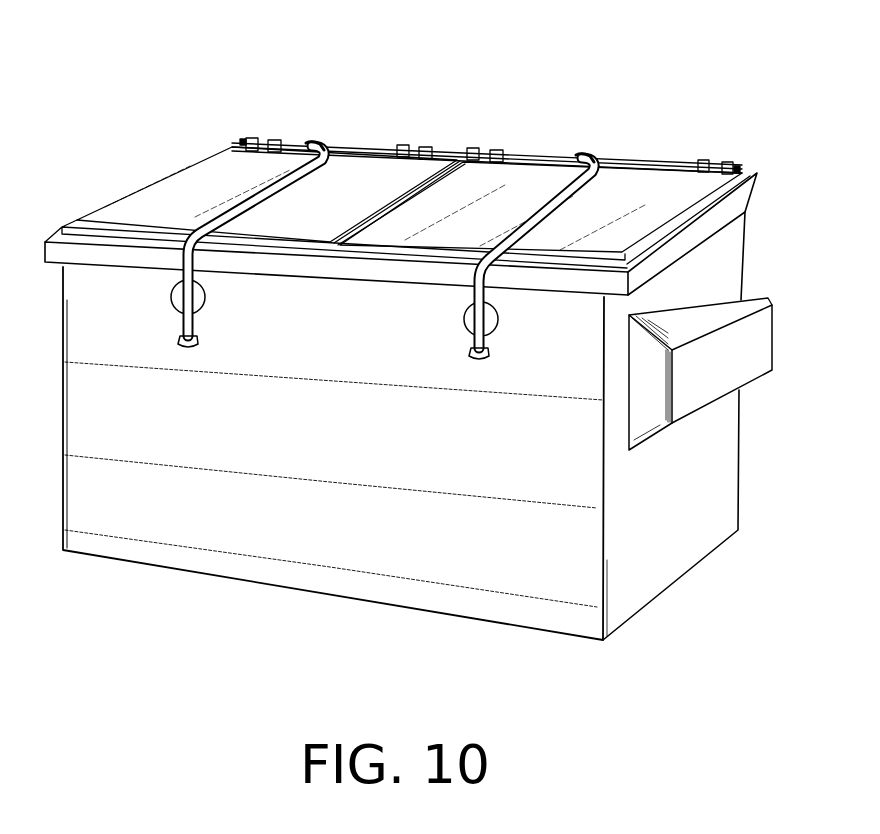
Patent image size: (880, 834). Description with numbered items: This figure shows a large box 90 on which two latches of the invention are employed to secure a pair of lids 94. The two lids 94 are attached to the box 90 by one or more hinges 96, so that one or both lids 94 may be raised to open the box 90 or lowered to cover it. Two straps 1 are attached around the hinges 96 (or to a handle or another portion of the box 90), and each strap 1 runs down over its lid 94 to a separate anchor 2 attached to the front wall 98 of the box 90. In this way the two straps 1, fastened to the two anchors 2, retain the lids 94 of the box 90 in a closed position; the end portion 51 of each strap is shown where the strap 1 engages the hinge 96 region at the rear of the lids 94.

The box 90 is at (433, 329).
The front wall 98 is at (303, 441).
The lid 94 is at (351, 176).
The hinge 96 is at (268, 138).
The hook end of locking bar 51 is at (318, 143).
The strap 1 is at (254, 194).
The anchor 2 is at (171, 299).